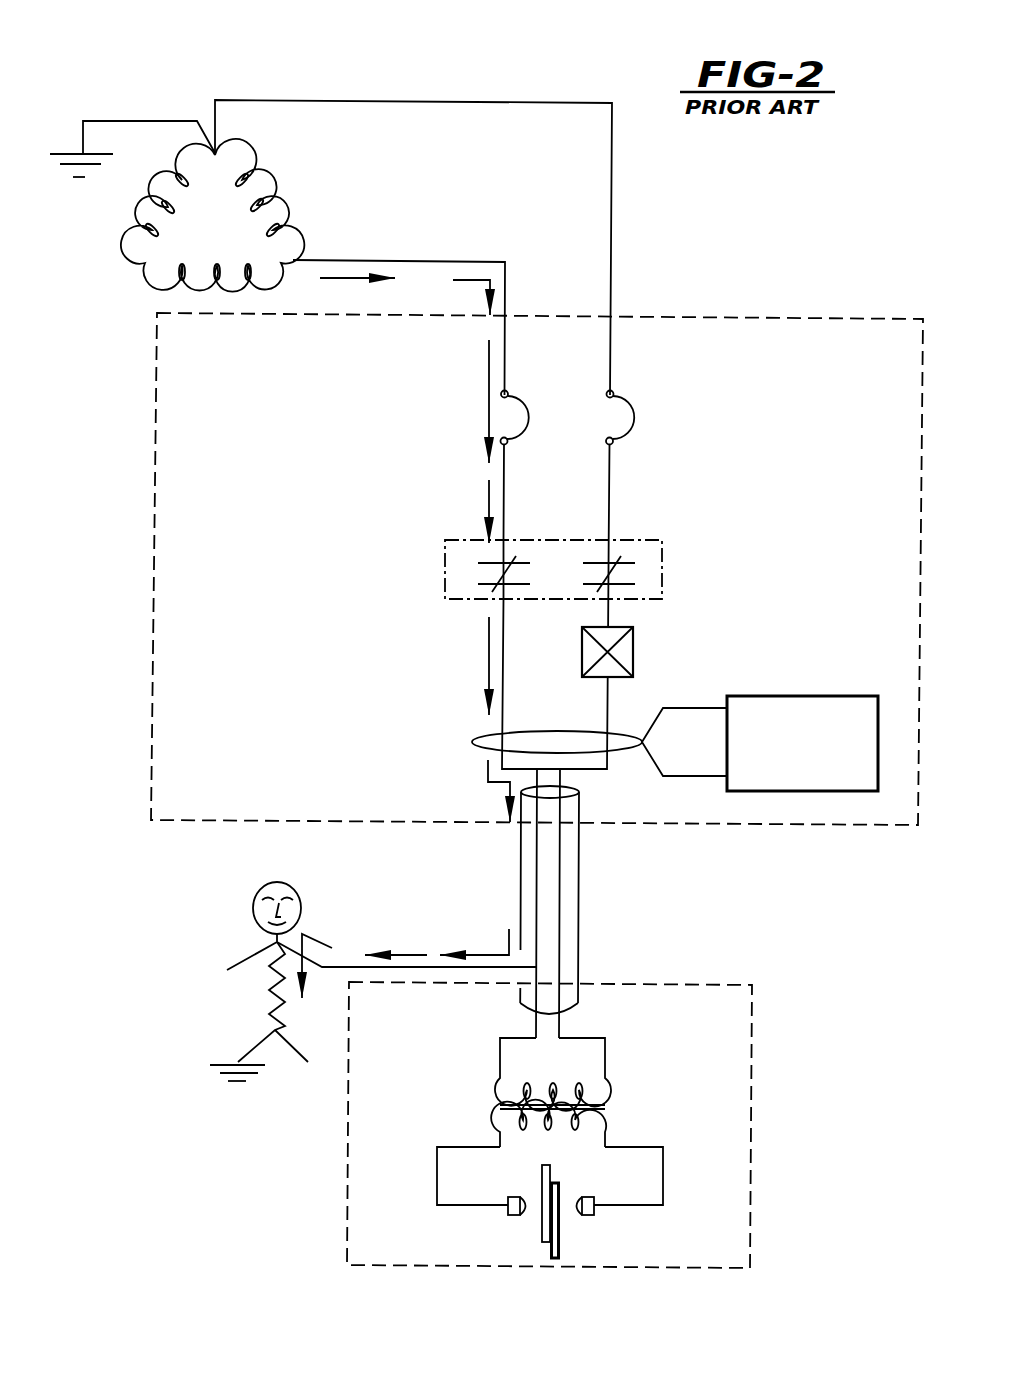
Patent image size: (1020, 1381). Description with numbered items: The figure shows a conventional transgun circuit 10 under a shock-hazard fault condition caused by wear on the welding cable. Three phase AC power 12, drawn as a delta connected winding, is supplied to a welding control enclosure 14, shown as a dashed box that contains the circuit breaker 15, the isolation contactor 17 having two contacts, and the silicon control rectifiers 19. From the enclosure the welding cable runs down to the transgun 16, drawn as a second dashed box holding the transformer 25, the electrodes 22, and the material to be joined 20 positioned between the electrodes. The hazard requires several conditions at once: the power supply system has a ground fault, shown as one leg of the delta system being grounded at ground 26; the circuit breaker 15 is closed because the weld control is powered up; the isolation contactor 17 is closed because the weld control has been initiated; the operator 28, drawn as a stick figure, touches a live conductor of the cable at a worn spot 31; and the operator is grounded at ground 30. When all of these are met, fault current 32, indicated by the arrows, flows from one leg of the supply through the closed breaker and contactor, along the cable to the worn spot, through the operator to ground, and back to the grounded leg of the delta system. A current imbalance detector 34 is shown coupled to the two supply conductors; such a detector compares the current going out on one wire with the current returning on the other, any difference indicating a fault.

The transgun circuit 10 is at (177, 80).
The power 12 is at (267, 177).
The welding control enclosure 14 is at (737, 317).
The circuit breaker 15 is at (645, 400).
The transgun 16 is at (347, 1170).
The isolation contactor 17 is at (670, 565).
The silicon control rectifiers 19 is at (633, 655).
The material to be joined 20 is at (565, 1237).
The electrodes 22 is at (598, 1216).
The transformer 25 is at (615, 1108).
The ground fault 26 is at (62, 172).
The operator 28 is at (262, 938).
The operator ground 30 is at (213, 1070).
The worn spot 31 is at (478, 990).
The fault current 32 is at (343, 280).
The current imbalance detector 34 is at (815, 696).